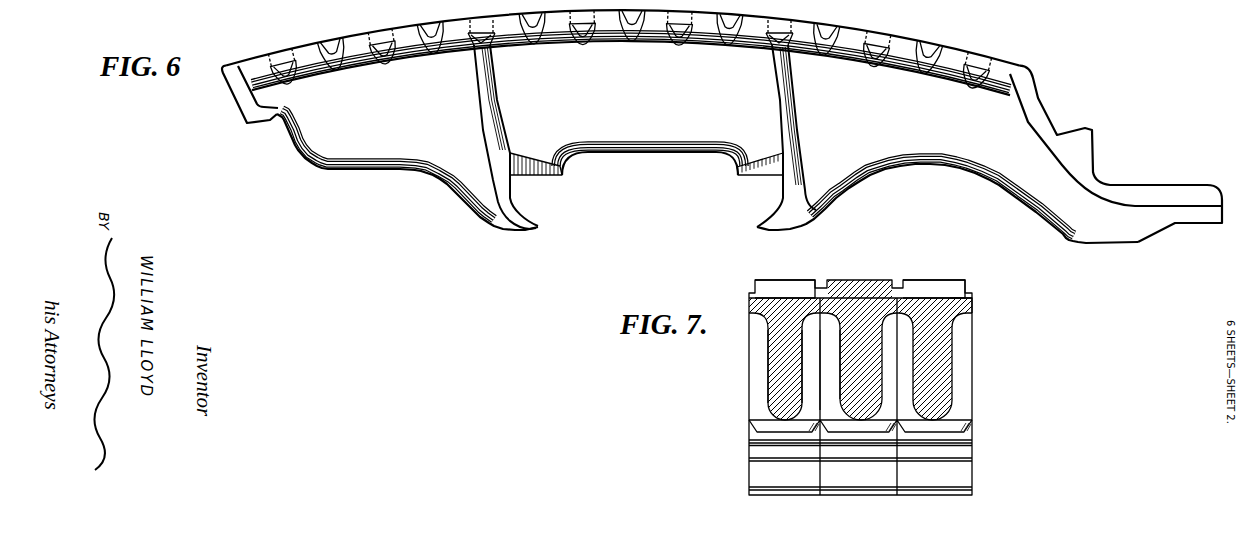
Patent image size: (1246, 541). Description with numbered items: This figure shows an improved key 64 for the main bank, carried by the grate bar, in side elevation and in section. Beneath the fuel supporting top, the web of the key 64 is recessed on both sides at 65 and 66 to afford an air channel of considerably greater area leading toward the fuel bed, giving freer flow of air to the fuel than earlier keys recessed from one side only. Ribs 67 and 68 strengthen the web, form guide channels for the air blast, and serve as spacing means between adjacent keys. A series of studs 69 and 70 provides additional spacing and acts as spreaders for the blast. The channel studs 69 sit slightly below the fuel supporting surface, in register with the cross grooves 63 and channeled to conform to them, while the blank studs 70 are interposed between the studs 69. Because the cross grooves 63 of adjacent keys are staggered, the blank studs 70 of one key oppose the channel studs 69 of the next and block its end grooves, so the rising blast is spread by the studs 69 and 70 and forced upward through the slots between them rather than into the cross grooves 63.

In FIG. 6, the cross grooves 63 is at (378, 33).
In FIG. 7, the cross grooves 63 is at (933, 290).
In FIG. 6, the key 64 is at (989, 154).
In FIG. 7, the key 64 is at (860, 302).
In FIG. 7, the recess 65 is at (830, 390).
In FIG. 7, the recess 66 is at (812, 355).
In FIG. 6, the rib 67 is at (479, 92).
In FIG. 6, the rib 68 is at (796, 127).
In FIG. 7, the rib 68 is at (972, 367).
In FIG. 6, the channel studs 69 is at (533, 46).
In FIG. 7, the channel studs 69 is at (972, 313).
In FIG. 6, the blank studs 70 is at (583, 47).
In FIG. 7, the blank studs 70 is at (818, 293).